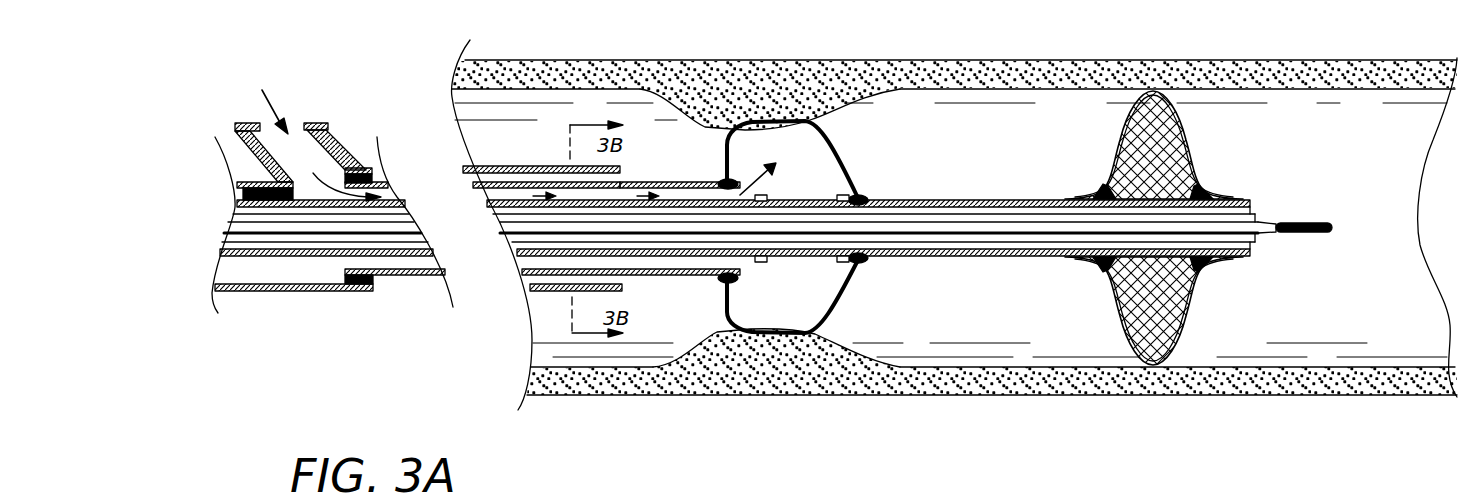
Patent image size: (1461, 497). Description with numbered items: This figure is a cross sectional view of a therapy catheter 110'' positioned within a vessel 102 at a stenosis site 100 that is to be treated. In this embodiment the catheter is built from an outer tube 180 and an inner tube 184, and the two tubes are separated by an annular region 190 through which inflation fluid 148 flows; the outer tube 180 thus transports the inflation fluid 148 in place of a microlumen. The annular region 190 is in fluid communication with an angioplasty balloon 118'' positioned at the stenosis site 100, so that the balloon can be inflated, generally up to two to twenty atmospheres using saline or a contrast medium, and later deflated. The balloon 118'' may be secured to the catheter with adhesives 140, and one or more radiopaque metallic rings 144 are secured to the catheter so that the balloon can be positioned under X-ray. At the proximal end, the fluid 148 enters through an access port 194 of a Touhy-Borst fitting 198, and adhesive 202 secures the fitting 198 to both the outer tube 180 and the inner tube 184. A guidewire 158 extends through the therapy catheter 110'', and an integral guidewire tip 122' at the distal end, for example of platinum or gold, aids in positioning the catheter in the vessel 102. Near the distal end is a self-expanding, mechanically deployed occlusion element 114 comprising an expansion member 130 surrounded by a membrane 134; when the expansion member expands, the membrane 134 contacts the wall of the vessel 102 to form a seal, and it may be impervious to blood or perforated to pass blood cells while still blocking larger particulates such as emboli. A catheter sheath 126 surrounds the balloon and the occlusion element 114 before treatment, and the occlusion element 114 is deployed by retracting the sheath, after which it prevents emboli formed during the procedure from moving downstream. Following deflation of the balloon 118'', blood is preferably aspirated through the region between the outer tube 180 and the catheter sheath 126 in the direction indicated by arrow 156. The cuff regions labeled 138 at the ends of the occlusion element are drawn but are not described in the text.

The stenosis site 100 is at (810, 382).
The vessel 102 is at (987, 397).
The therapy catheter 110'' is at (738, 177).
The occlusion element 114 is at (1224, 136).
The angioplasty balloon 118'' is at (839, 222).
The guidewire tip 122' is at (1327, 253).
The catheter sheath 126 is at (537, 163).
The expansion member 130 is at (1163, 167).
The membrane 134 is at (1118, 133).
The balloon cuff 138 is at (1100, 190).
The adhesives 140 is at (730, 183).
The radiopaque metallic rings 144 is at (762, 264).
The inflation fluid 148 is at (265, 90).
The arrow 156 is at (687, 144).
The guidewire 158 is at (1230, 230).
The outer tube 180 is at (382, 187).
The inner tube 184 is at (283, 213).
The annular region 190 is at (563, 260).
The access port 194 is at (250, 107).
The Touhy-Borst fitting 198 is at (283, 173).
The adhesive 202 is at (350, 168).